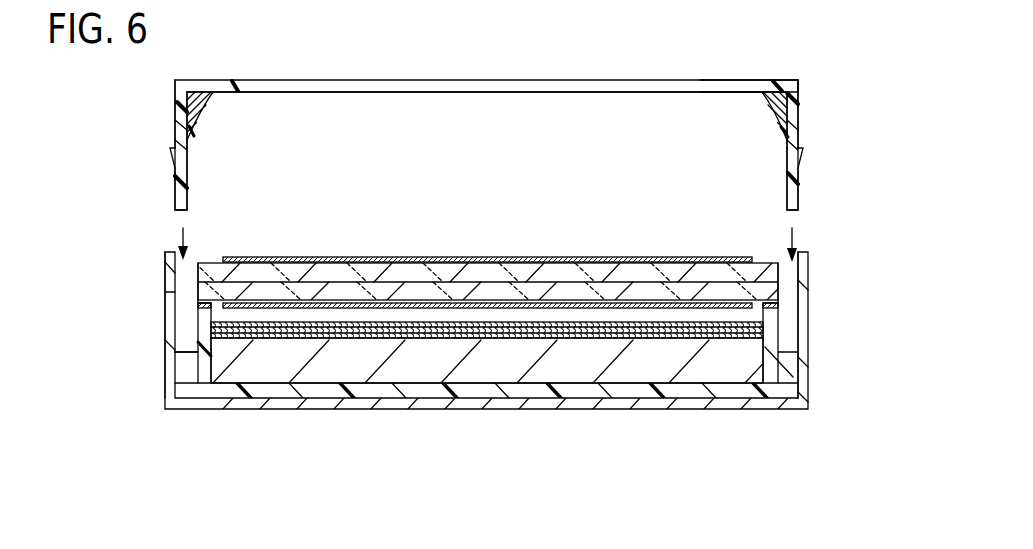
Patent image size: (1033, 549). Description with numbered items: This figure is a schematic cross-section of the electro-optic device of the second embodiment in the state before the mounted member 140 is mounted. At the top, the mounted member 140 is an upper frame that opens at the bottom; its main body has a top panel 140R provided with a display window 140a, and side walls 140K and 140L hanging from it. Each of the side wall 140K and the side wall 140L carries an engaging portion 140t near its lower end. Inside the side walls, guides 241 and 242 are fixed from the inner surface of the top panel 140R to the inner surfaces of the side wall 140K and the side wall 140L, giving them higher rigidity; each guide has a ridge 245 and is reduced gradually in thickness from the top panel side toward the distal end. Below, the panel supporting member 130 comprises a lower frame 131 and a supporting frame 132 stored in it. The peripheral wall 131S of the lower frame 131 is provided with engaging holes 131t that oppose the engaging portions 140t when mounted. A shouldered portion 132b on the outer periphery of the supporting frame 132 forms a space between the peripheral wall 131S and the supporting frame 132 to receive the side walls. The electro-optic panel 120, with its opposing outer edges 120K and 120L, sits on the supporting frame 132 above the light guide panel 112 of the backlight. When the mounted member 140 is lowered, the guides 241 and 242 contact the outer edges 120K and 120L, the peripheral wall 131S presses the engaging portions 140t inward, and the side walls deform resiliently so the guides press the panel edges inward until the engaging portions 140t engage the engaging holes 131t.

The mounted member 140 is at (479, 113).
The display window 140a is at (416, 80).
The side wall 140L is at (175, 97).
The top panel 140R is at (750, 80).
The side wall 140K is at (800, 93).
The engaging portion 140t is at (172, 175).
The guide 241 is at (790, 82).
The guide 242 is at (210, 80).
The ridge 245 is at (197, 117).
The electro-optic panel 120 is at (487, 250).
The outer edge 120L is at (198, 256).
The outer edge 120K is at (778, 257).
The panel supporting member 130 is at (480, 376).
The lower frame 131 is at (320, 408).
The engaging hole 131t is at (170, 327).
The peripheral wall 131S is at (803, 365).
The supporting frame 132 is at (394, 392).
The shouldered portion 132b is at (190, 352).
The light guide panel 112 is at (553, 372).